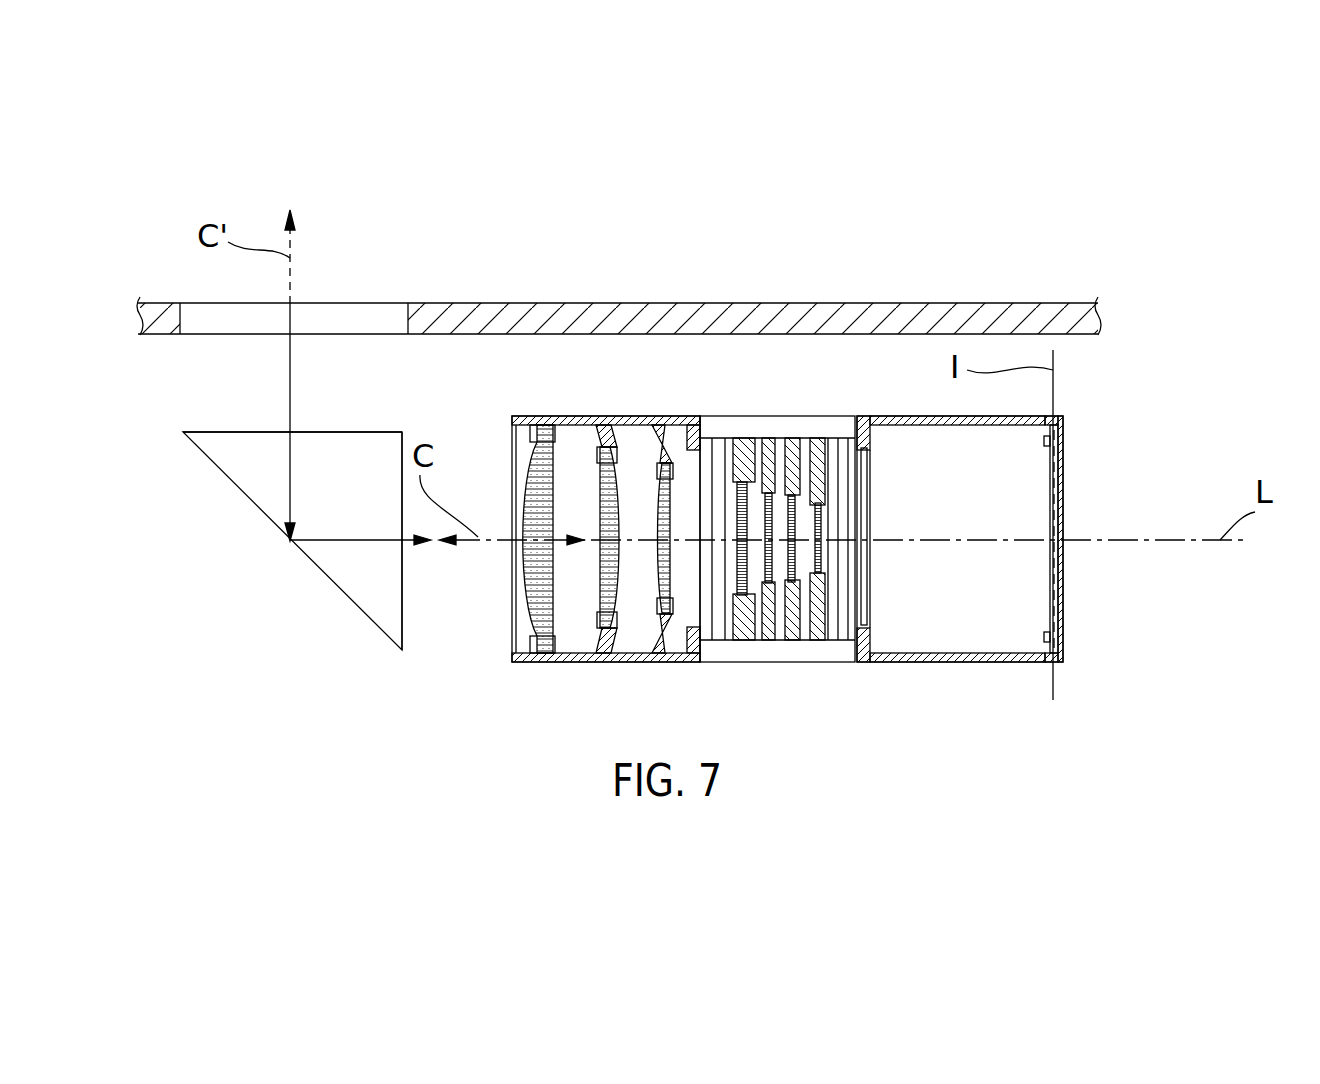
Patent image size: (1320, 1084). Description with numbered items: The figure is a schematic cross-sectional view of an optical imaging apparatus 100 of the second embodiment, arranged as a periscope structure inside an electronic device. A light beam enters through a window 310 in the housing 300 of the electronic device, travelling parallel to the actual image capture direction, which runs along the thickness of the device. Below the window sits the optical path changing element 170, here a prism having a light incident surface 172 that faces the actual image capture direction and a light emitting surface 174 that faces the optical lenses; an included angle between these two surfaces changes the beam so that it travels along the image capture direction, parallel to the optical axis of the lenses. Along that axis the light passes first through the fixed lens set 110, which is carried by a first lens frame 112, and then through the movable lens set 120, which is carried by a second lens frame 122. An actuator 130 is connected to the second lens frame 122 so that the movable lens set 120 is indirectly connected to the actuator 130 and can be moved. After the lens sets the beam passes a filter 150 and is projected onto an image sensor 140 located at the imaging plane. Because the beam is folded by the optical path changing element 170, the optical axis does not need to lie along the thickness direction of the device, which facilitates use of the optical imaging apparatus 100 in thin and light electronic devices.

The optical imaging apparatus 100 is at (1182, 378).
The fixed lens set 110 is at (572, 450).
The first lens frame 112 is at (555, 660).
The movable lens set 120 is at (755, 490).
The second lens frame 122 is at (778, 640).
The actuator 130 is at (828, 620).
The image sensor 140 is at (1058, 455).
The filter 150 is at (868, 503).
The optical path changing element 170 is at (265, 517).
The light incident surface 172 is at (345, 425).
The light emitting surface 174 is at (420, 592).
The housing 300 is at (994, 300).
The window 310 is at (400, 308).